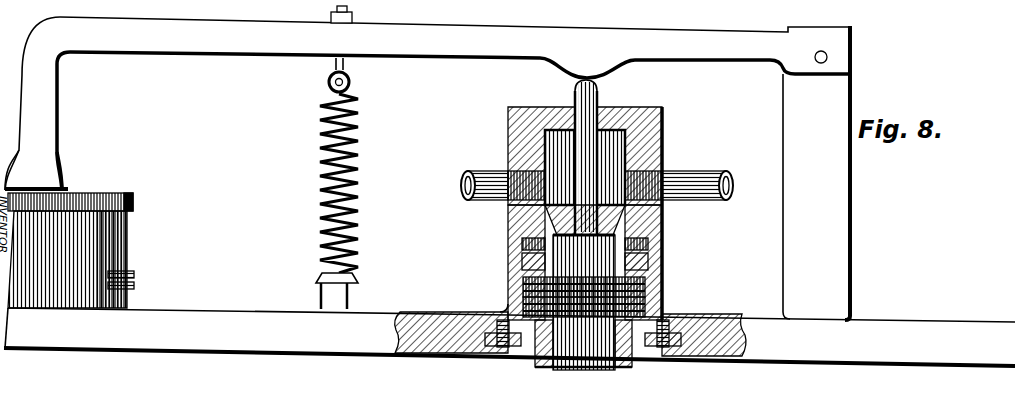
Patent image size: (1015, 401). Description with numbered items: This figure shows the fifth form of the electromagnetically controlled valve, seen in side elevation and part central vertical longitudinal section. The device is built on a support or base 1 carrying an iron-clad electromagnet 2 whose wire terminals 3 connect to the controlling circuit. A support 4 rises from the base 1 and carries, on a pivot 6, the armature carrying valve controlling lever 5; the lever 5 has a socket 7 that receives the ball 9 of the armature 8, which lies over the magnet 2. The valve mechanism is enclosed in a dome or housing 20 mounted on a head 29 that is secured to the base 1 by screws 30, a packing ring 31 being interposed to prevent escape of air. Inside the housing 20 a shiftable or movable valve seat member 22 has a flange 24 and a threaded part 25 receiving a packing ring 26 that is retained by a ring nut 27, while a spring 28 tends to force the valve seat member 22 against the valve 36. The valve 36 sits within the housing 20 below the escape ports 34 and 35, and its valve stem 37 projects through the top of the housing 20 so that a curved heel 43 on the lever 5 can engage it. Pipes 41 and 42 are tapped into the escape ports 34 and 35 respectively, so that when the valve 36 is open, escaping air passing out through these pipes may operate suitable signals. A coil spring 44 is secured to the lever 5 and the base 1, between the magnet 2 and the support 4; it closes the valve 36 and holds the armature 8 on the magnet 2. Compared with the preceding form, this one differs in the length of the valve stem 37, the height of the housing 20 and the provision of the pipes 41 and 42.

The support or base 1 is at (509, 337).
The iron-clad electromagnet 2 is at (121, 239).
The wire terminals 3 is at (136, 283).
The support 4 is at (802, 196).
The armature carrying valve controlling lever 5 is at (427, 168).
The pivot 6 is at (815, 57).
The socket 7 is at (54, 187).
The armature 8 is at (126, 194).
The ball 9 is at (40, 186).
The dome or housing 20 is at (506, 113).
The shiftable or movable valve seat member 22 is at (524, 250).
The flange 24 is at (650, 251).
The threaded part 25 is at (583, 302).
The packing ring 26 is at (650, 266).
The ring nut 27 is at (628, 282).
The spring 28 is at (640, 300).
The head 29 is at (742, 308).
The screws 30 is at (503, 322).
The packing ring 31 is at (487, 335).
The escape port 34 is at (654, 178).
The escape port 35 is at (524, 172).
The valve 36 is at (507, 225).
The valve stem 37 is at (602, 98).
The pipe 41 is at (712, 183).
The pipe 42 is at (482, 168).
The curved heel 43 is at (587, 64).
The coil spring 44 is at (323, 157).